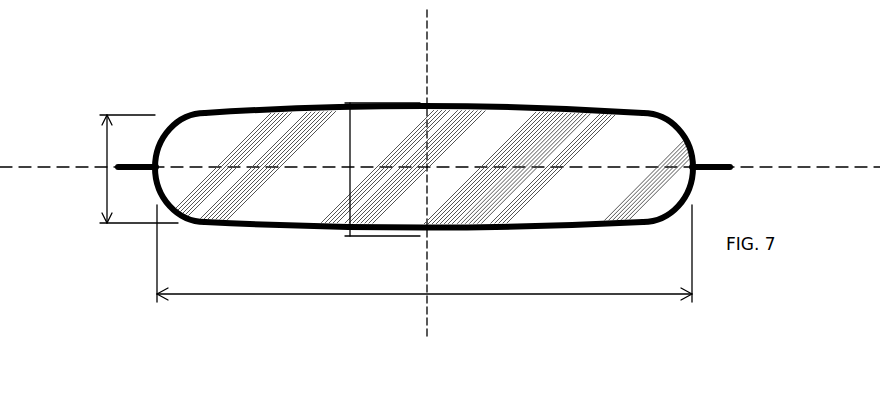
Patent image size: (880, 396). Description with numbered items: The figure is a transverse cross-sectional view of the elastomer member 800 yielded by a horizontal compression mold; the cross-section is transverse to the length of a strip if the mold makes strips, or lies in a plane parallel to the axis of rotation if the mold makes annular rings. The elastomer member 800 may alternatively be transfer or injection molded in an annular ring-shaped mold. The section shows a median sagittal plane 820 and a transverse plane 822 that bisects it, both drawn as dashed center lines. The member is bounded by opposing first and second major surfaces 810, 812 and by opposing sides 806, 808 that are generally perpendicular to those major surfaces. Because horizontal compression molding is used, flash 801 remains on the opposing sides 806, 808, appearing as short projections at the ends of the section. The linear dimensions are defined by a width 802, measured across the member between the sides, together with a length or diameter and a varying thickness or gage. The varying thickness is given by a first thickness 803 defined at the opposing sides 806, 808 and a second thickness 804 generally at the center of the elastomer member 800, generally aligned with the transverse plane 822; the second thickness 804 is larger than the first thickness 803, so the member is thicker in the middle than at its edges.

The elastomer member 800 is at (302, 262).
The flash 801 is at (149, 165).
The width 802 is at (518, 290).
The first thickness 803 is at (100, 138).
The second thickness 804 is at (345, 130).
The opposing side 806 is at (695, 151).
The opposing side 808 is at (148, 178).
The first major surface 810 is at (647, 109).
The second major surface 812 is at (635, 230).
The median sagittal plane 820 is at (832, 160).
The transverse plane 822 is at (427, 46).